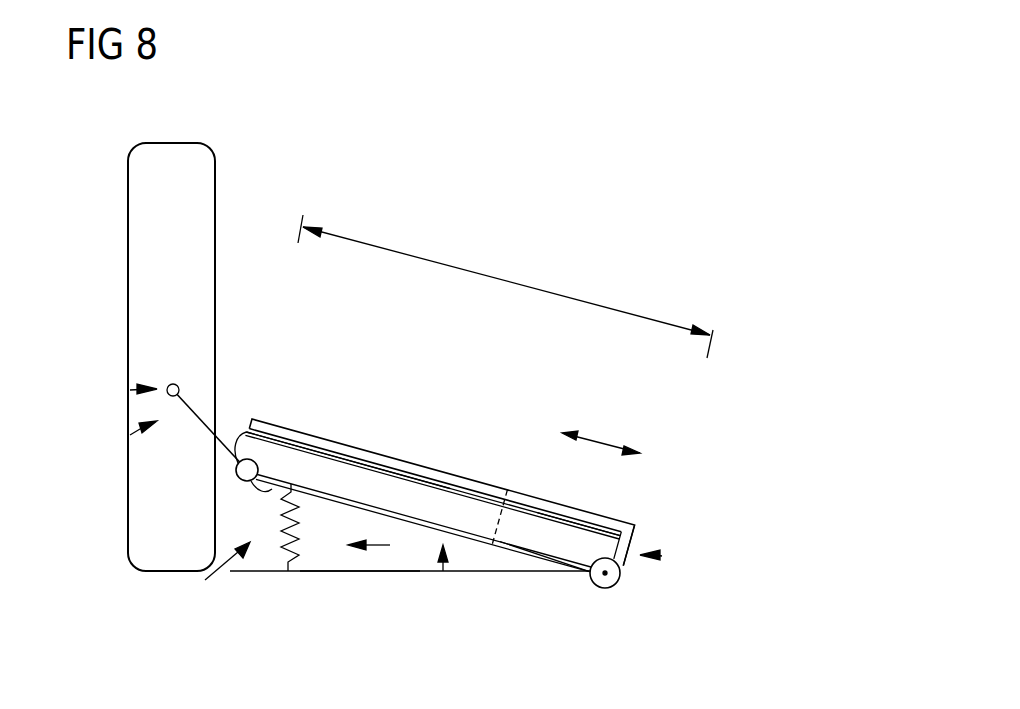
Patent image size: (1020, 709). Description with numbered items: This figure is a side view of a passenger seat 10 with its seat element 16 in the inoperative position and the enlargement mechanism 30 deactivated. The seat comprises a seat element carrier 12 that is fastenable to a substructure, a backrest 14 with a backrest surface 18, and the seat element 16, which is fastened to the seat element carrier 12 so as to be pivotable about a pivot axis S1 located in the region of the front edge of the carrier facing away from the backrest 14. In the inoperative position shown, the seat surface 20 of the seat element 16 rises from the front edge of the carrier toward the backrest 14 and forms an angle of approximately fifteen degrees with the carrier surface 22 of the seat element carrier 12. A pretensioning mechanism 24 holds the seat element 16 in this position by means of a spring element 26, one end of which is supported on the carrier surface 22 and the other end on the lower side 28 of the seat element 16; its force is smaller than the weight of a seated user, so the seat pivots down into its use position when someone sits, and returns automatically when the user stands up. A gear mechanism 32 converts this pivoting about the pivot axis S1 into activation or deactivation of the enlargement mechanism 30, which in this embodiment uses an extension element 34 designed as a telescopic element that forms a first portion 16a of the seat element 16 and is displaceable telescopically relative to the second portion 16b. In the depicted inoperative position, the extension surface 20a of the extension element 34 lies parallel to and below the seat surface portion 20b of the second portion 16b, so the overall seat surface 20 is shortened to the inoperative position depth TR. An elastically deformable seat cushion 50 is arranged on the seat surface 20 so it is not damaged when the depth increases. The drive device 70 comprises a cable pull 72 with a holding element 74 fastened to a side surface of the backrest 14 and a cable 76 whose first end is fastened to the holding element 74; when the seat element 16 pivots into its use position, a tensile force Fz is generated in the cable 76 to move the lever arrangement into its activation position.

The passenger seat 10 is at (641, 199).
The seat element carrier 12 is at (496, 572).
The backrest 14 is at (172, 149).
The seat element 16 is at (507, 490).
The first portion of the seat element 16a is at (547, 520).
The second portion of the seat element 16b is at (337, 468).
The backrest surface 18 is at (216, 272).
The seat surface 20 is at (397, 470).
The extension surface 20a is at (607, 518).
The seat surface portion 20b is at (450, 485).
The carrier surface 22 is at (332, 572).
The pretensioning mechanism 24 is at (218, 579).
The spring element 26 is at (282, 550).
The lower side of the seat element 28 is at (268, 490).
The enlargement mechanism 30 is at (662, 556).
The gear mechanism 32 is at (443, 572).
The extension element 34 is at (560, 556).
The seat cushion 50 is at (300, 440).
The drive device 70 is at (130, 390).
The cable pull 72 is at (130, 435).
The holding element 74 is at (167, 386).
The cable 76 is at (193, 410).
The pivot axis S1 is at (605, 589).
The inoperative position depth TR is at (509, 277).
The tensile force Fz is at (378, 551).